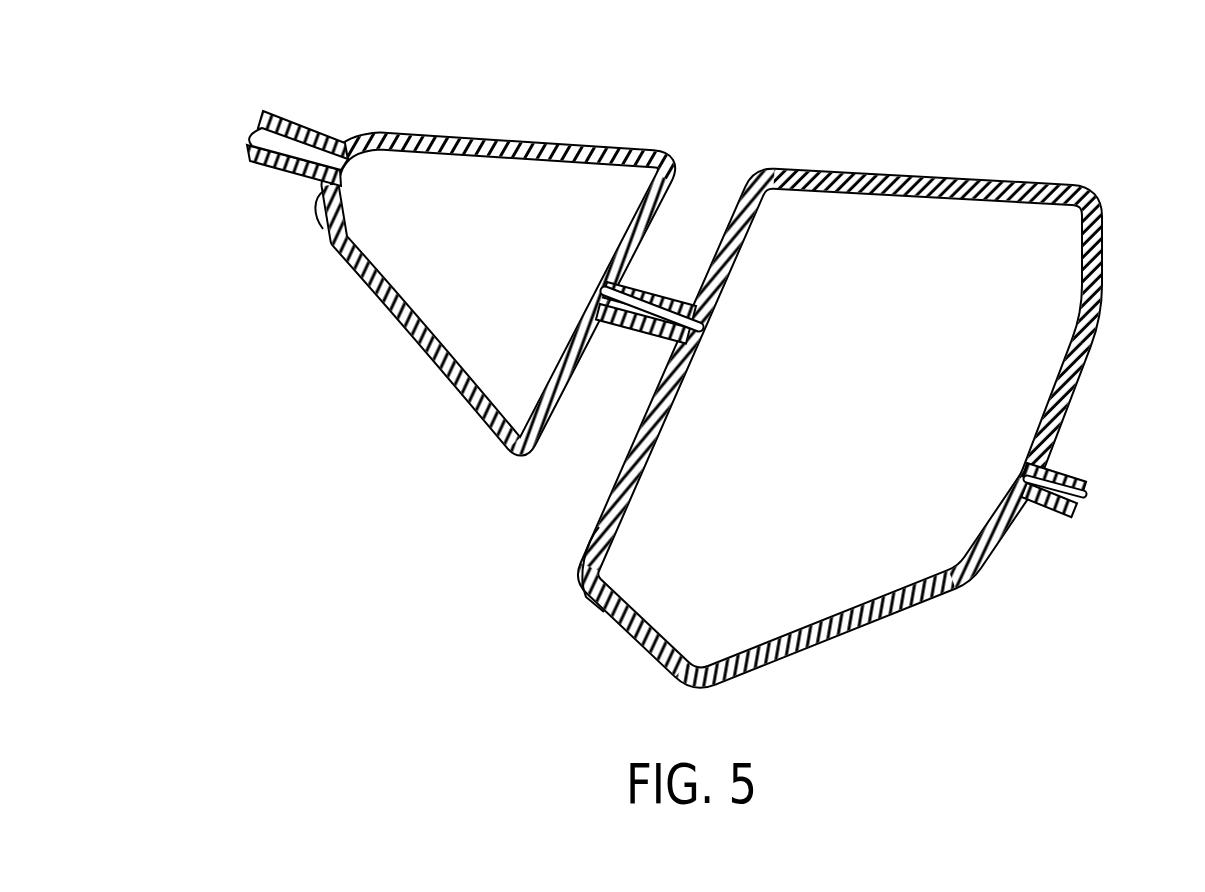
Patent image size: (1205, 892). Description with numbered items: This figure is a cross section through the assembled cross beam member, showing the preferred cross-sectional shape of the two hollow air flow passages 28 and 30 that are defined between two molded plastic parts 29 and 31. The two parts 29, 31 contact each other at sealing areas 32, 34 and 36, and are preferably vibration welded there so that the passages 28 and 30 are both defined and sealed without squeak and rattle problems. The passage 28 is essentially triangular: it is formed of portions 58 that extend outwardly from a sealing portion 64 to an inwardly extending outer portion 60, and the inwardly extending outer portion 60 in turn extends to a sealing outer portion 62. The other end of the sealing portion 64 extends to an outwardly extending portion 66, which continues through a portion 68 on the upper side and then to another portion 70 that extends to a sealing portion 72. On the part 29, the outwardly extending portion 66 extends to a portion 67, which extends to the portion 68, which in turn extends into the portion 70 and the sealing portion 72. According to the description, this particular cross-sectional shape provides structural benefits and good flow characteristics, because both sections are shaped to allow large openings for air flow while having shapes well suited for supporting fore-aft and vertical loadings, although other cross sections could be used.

The air flow passage 28 is at (490, 248).
The molded plastic part 29 is at (588, 596).
The air flow passage 30 is at (829, 395).
The molded plastic part 31 is at (753, 176).
The sealing area 32 is at (645, 336).
The sealing area 34 is at (249, 150).
The sealing area 36 is at (1093, 475).
The portion 58 is at (516, 436).
The inwardly extending outer portion 60 is at (513, 136).
The sealing outer portion 62 is at (252, 128).
The sealing portion 64 is at (649, 295).
The outwardly extending portion 66 is at (716, 283).
The portion 67 is at (650, 658).
The portion 68 is at (920, 192).
The portion 70 is at (1103, 318).
The sealing portion 72 is at (1085, 492).